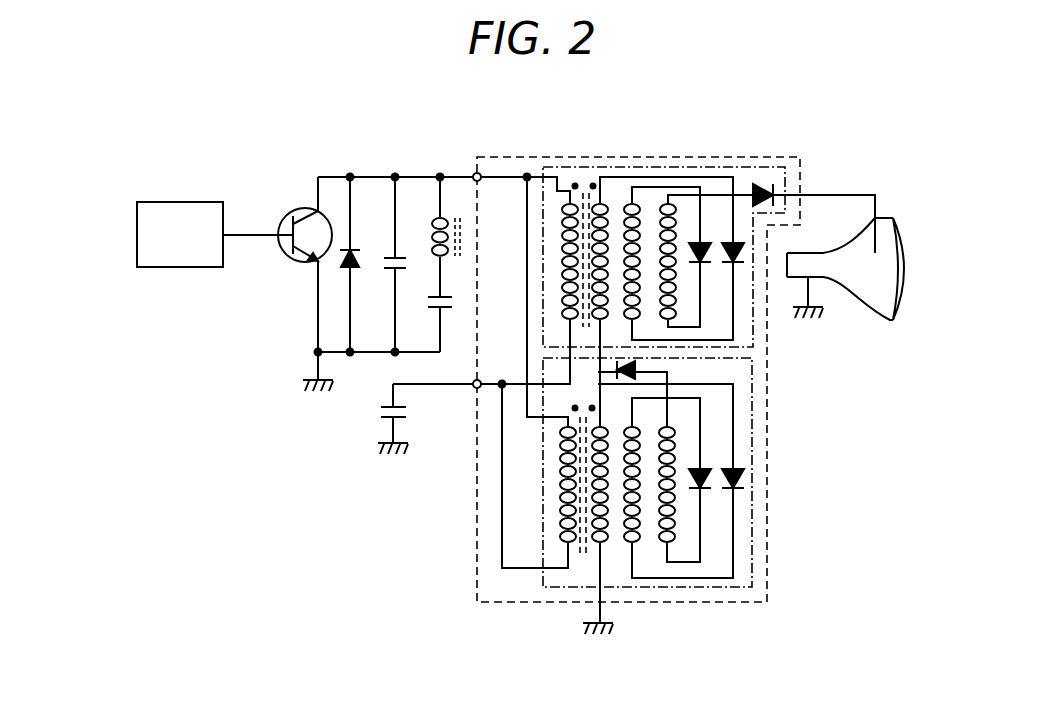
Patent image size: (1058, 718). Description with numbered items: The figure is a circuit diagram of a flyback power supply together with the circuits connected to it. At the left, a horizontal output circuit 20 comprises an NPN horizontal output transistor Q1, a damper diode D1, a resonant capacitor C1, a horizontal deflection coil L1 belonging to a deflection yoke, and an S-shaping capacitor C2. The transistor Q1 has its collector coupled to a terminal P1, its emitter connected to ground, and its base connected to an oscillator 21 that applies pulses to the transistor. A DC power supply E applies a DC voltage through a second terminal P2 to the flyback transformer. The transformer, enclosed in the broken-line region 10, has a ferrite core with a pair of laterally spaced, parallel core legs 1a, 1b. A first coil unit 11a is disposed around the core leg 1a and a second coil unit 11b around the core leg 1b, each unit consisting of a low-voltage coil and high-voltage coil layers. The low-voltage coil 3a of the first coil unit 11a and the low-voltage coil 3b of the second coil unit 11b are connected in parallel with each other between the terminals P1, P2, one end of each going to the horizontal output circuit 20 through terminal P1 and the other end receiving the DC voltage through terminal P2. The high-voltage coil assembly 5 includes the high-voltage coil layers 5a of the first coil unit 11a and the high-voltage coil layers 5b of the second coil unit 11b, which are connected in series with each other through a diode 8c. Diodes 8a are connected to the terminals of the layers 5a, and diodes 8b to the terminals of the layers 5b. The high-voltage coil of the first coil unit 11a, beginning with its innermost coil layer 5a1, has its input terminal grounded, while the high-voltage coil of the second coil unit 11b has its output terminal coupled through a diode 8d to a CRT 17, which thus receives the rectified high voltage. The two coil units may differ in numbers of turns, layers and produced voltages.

The horizontal output circuit 20 is at (302, 162).
The oscillator 21 is at (211, 200).
The NPN horizontal output transistor Q1 is at (286, 262).
The damper diode D1 is at (346, 270).
The resonant capacitor C1 is at (389, 254).
The horizontal deflection coil L1 is at (435, 226).
The S-shaping capacitor C2 is at (433, 310).
The DC power supply E is at (378, 407).
The terminal P1 is at (488, 192).
The terminal P2 is at (464, 397).
The high-voltage generating circuit 10 is at (475, 558).
The high-voltage coil assembly 5 is at (666, 153).
The first coil unit 11a is at (753, 558).
The second coil unit 11b is at (557, 165).
The core leg 1a is at (581, 557).
The core leg 1b is at (587, 190).
The low-voltage coil 3a is at (566, 545).
The low-voltage coil 3b is at (571, 192).
The high-voltage coil layers 5a is at (671, 548).
The innermost coil layer 5a1 is at (601, 545).
The high-voltage coil layers 5b is at (670, 203).
The diodes 8a is at (736, 473).
The diodes 8b is at (734, 243).
The diode 8c is at (640, 368).
The diode 8d is at (768, 185).
The CRT 17 is at (887, 218).